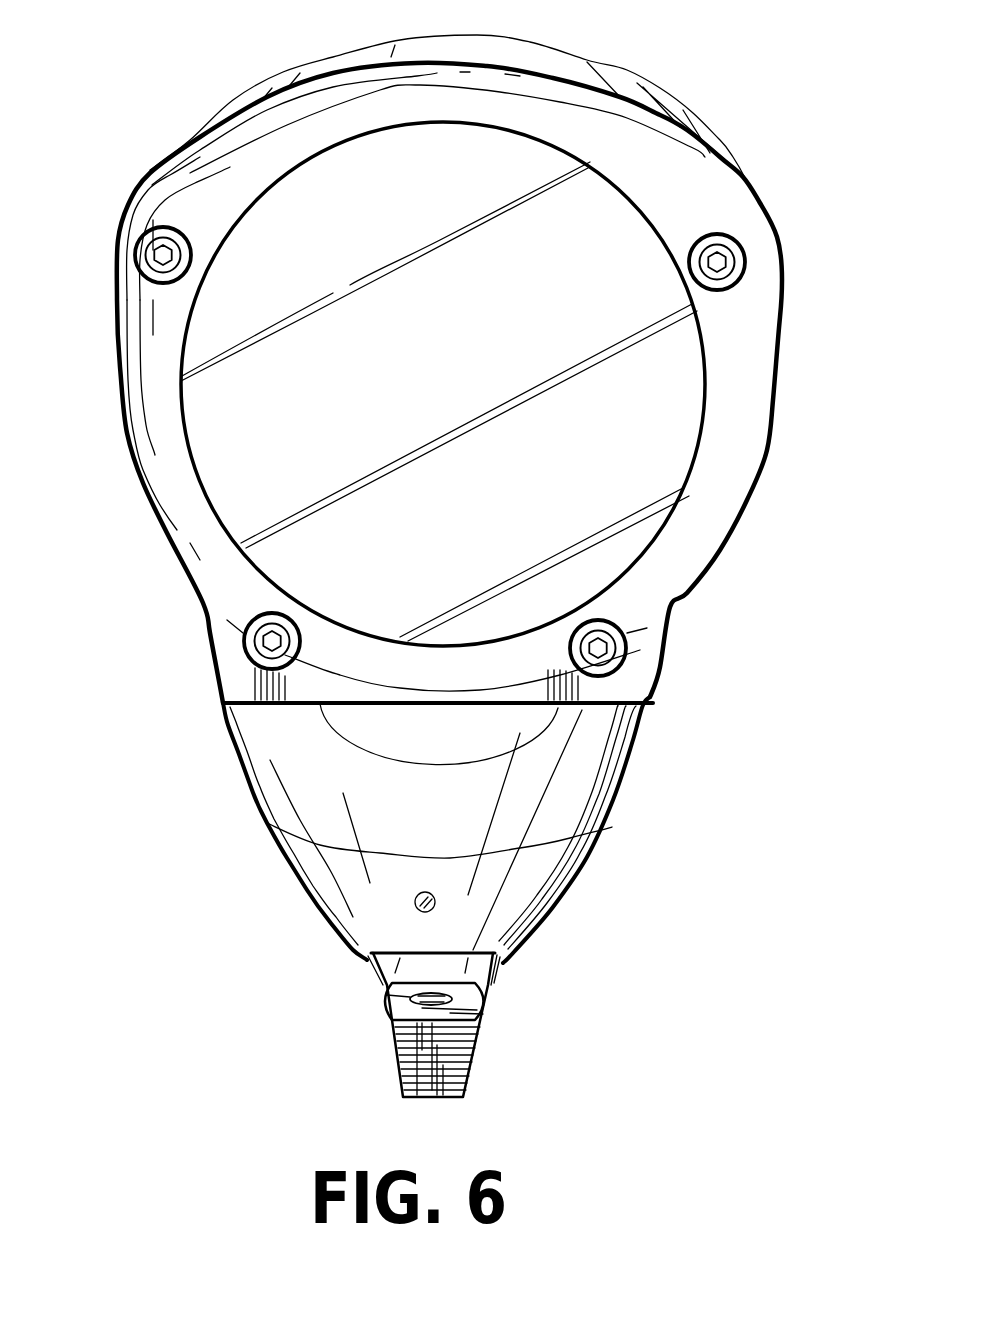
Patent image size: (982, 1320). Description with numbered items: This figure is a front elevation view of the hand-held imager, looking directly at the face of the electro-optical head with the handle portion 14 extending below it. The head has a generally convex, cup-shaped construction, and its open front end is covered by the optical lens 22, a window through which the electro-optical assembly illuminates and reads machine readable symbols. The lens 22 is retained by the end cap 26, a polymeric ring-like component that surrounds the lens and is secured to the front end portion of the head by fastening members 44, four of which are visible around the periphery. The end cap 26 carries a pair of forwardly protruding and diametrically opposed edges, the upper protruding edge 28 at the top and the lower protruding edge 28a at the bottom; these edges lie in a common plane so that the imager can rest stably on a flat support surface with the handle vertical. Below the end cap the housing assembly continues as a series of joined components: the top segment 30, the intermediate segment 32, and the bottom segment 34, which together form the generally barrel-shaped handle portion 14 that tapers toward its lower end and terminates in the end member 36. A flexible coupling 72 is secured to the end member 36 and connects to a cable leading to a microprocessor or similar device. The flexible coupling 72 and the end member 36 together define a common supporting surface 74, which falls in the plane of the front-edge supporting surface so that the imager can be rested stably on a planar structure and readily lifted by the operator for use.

The handle portion 14 is at (240, 773).
The optical lens 22 is at (446, 392).
The end cap 26 is at (757, 407).
The protruding edge 28 is at (548, 78).
The protruding edge 28a is at (481, 695).
The top segment 30 is at (618, 762).
The intermediate segment 32 is at (540, 804).
The bottom segment 34 is at (413, 752).
The end member 36 is at (565, 893).
The fastening members 44 is at (160, 255).
The flexible coupling 72 is at (387, 1020).
The supporting surface 74 is at (473, 1005).